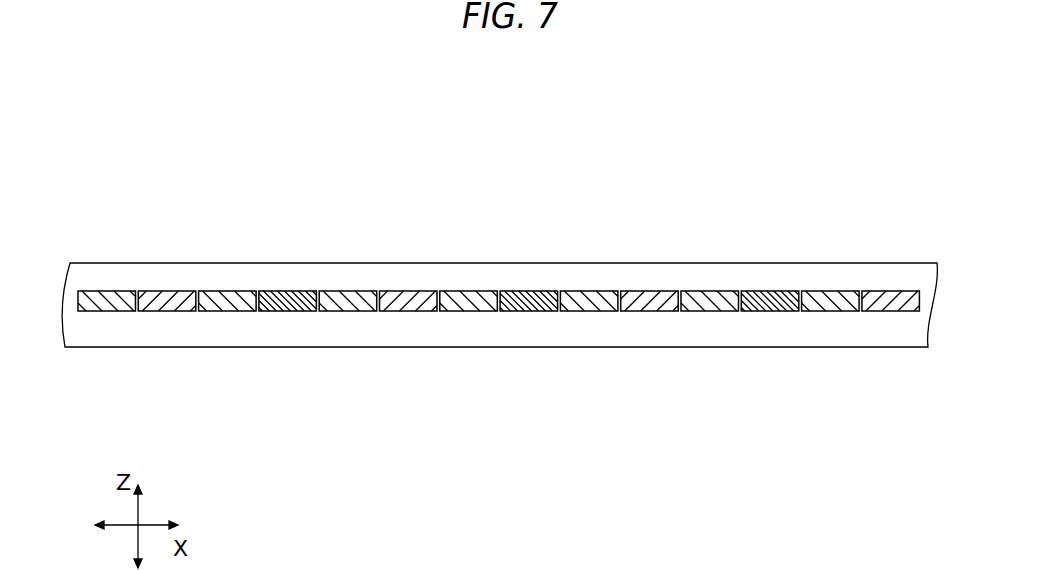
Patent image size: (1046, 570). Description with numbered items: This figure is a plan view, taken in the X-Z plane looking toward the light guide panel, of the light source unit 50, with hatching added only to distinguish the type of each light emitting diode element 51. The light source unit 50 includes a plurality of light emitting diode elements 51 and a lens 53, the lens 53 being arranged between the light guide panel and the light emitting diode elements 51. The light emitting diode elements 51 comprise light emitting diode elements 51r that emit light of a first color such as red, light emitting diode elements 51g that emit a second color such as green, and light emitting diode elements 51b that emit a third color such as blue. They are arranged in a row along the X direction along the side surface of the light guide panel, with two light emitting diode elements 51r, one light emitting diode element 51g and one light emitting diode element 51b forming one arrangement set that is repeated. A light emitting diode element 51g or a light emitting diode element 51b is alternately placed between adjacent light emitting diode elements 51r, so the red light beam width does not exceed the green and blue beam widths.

The light source unit 50 is at (700, 218).
The light emitting diode element 51 is at (498, 302).
The light emitting diode element (first color, red) 51r is at (107, 312).
The light emitting diode element (second color, green) 51g is at (410, 290).
The light emitting diode element (third color, blue) 51b is at (528, 290).
The lens 53 is at (803, 323).